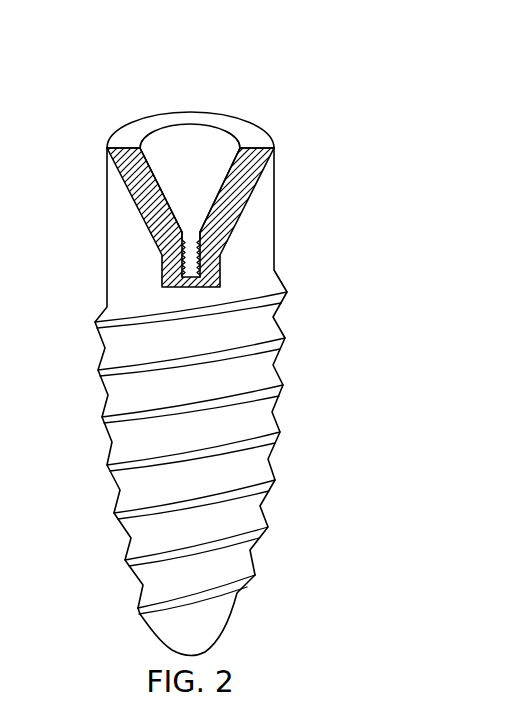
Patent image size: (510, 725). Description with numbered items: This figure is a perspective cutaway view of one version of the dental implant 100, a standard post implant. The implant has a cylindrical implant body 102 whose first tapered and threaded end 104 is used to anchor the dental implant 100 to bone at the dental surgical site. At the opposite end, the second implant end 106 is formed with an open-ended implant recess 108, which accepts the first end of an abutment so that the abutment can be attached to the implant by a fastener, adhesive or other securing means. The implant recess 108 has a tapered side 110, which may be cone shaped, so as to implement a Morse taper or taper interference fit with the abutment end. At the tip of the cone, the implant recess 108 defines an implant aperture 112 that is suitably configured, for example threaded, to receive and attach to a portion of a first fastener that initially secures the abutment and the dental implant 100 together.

The dental implant 100 is at (273, 518).
The cylindrical implant body 102 is at (283, 397).
The first tapered and threaded end 104 is at (238, 618).
The second implant end 106 is at (265, 112).
The implant recess 108 is at (199, 177).
The tapered side 110 is at (157, 190).
The implant aperture 112 is at (205, 258).